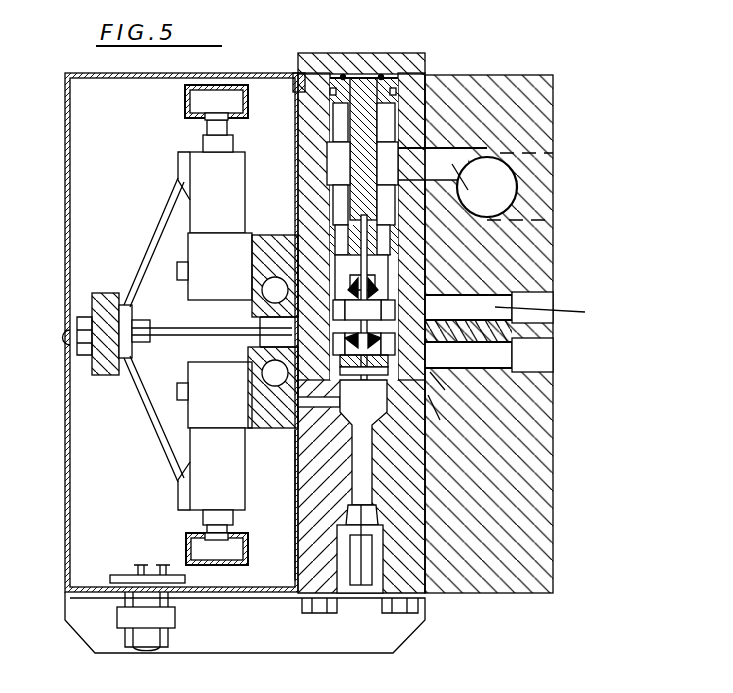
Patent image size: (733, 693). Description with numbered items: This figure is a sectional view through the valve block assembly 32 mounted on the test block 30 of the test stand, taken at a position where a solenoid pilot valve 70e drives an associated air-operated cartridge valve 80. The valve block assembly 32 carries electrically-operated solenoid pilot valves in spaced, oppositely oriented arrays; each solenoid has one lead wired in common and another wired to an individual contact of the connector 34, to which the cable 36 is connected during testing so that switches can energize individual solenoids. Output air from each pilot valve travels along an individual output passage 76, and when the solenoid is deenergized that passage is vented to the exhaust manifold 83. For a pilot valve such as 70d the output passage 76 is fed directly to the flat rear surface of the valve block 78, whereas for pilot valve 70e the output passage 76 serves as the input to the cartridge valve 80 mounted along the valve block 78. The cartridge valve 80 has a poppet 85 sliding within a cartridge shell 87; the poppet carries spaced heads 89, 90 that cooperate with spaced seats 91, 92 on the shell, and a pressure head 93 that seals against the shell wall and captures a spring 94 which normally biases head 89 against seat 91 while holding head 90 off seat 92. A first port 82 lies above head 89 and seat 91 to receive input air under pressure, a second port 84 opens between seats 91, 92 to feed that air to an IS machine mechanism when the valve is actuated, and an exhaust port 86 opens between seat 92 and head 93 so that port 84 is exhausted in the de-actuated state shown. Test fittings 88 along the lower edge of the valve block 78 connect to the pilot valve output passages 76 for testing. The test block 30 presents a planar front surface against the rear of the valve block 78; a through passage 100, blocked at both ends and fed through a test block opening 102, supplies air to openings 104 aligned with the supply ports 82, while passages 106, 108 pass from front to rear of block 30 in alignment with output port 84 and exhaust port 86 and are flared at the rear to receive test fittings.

The test block 30 is at (566, 81).
The valve block assembly 32 is at (97, 72).
The connector 34 is at (118, 601).
The cable 36 is at (172, 637).
The solenoid pilot valve 70d is at (203, 205).
The solenoid pilot valve 70e is at (208, 457).
The output passage 76 is at (303, 433).
The valve block 78 is at (430, 80).
The cartridge valve 80 is at (402, 272).
The first port 82 is at (415, 150).
The exhaust manifold 83 is at (186, 104).
The second port 84 is at (489, 307).
The poppet 85 is at (400, 252).
The exhaust port 86 is at (428, 375).
The cartridge shell 87 is at (318, 234).
The test fitting 88 is at (356, 560).
The head 89 is at (333, 270).
The head 90 is at (394, 345).
The seat 91 is at (334, 304).
The seat 92 is at (334, 340).
The pressure head 93 is at (372, 398).
The spring 94 is at (427, 405).
The through passage 100 is at (512, 182).
The test block opening 102 is at (560, 215).
The opening 104 is at (466, 188).
The passage 106 is at (562, 312).
The passage 108 is at (489, 355).